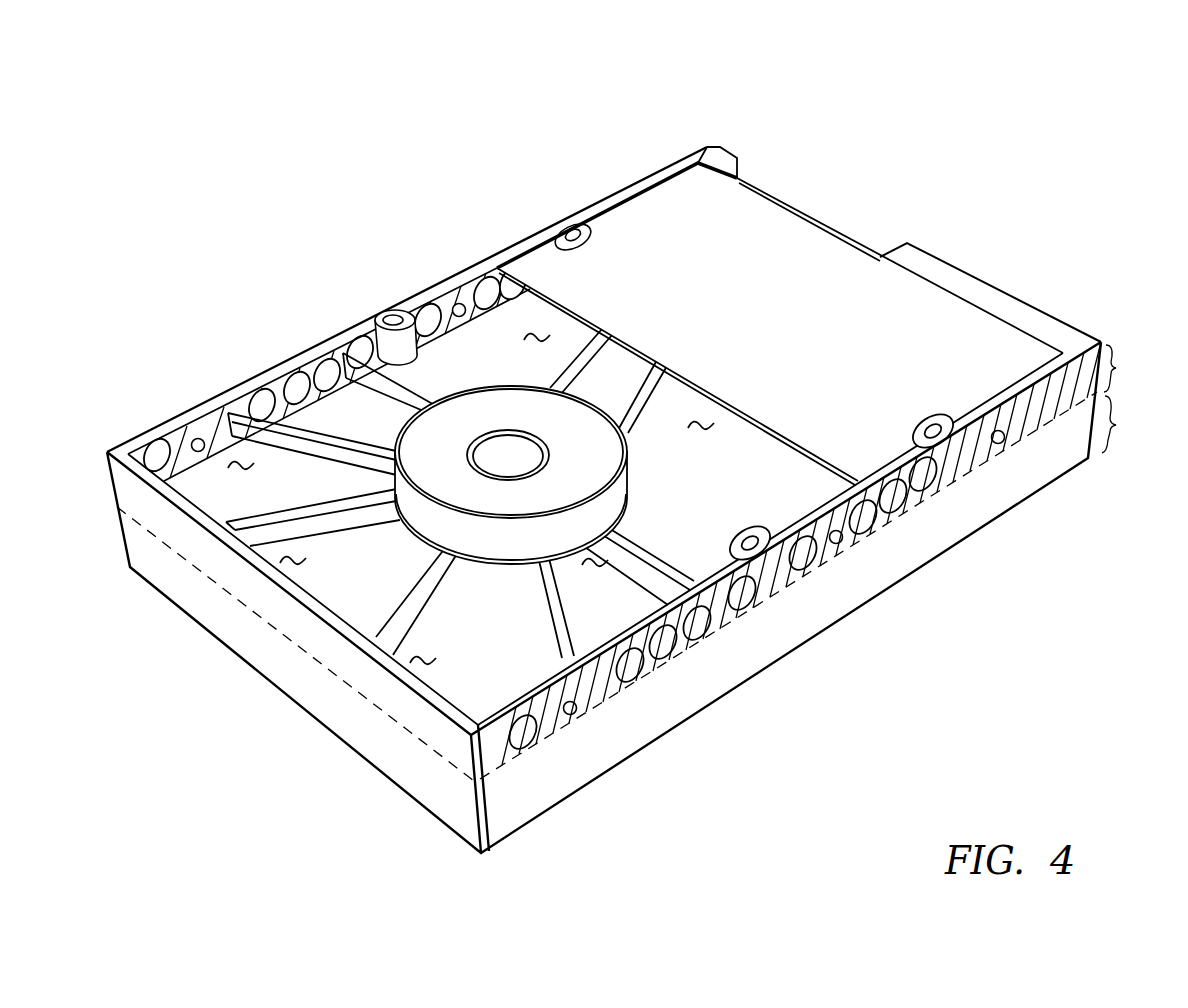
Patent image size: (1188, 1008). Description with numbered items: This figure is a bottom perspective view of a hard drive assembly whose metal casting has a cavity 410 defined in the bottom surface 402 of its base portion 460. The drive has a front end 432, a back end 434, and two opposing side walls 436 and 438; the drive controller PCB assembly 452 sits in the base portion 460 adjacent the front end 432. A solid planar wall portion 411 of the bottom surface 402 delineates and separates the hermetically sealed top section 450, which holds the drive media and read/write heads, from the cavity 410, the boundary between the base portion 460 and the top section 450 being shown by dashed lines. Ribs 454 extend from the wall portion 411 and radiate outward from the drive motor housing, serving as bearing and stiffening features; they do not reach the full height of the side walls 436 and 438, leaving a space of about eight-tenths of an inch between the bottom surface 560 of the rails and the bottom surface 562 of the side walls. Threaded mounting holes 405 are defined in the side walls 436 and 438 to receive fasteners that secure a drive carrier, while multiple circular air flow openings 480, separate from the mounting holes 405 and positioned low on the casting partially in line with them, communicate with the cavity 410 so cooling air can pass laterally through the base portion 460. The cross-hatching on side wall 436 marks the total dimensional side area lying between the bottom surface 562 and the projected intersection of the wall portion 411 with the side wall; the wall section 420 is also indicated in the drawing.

The bottom surface 402 is at (333, 400).
The threaded mounting holes 405 is at (195, 437).
The cavity 410 is at (337, 580).
The solid planar wall portion 411 is at (545, 335).
The wall section 420 is at (290, 378).
The front end 432 is at (925, 265).
The back end 434 is at (335, 728).
The side wall 436 is at (602, 705).
The side wall 438 is at (226, 387).
The top section 450 is at (1129, 424).
The drive controller PCB assembly 452 is at (807, 233).
The ribs 454 is at (348, 447).
The base portion 460 is at (1131, 368).
The circular air flow openings 480 is at (150, 443).
The bottom surface of the rails 560 is at (383, 382).
The bottom surface of the side walls 562 is at (513, 247).